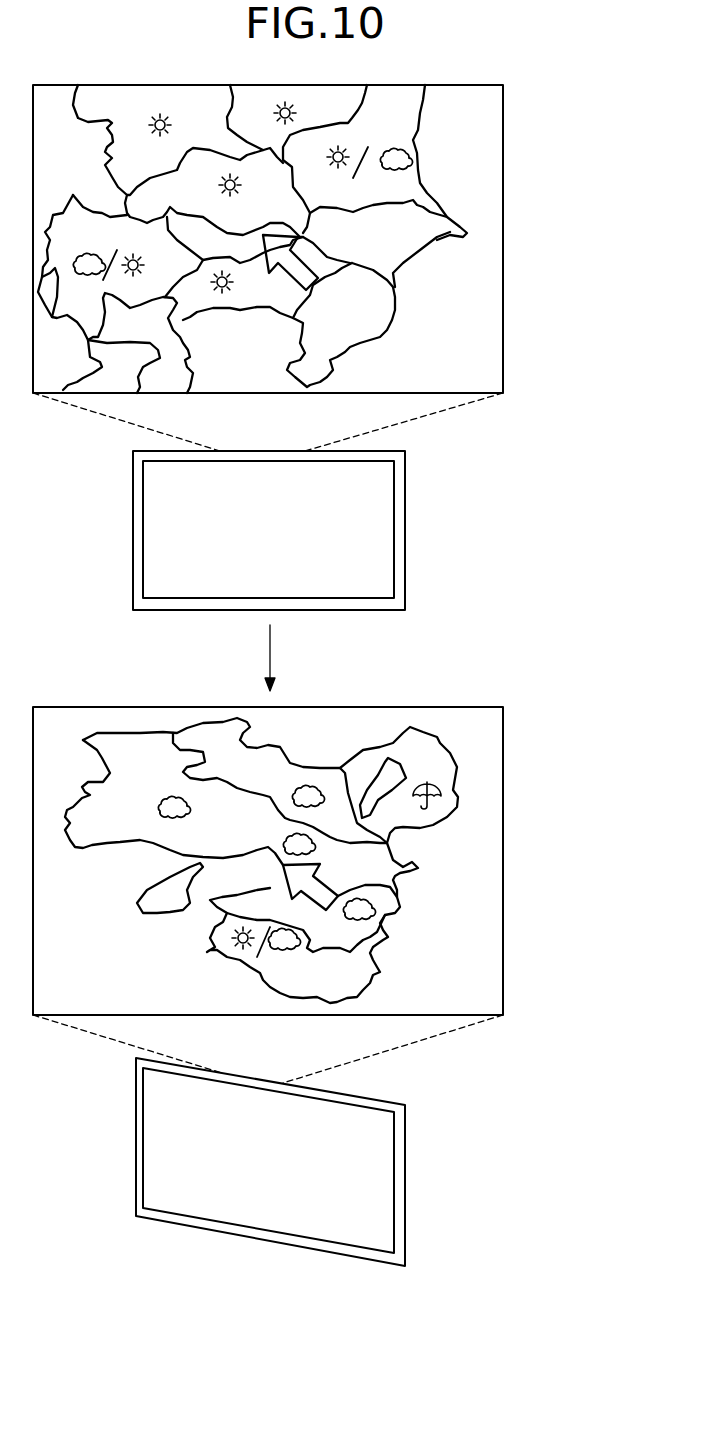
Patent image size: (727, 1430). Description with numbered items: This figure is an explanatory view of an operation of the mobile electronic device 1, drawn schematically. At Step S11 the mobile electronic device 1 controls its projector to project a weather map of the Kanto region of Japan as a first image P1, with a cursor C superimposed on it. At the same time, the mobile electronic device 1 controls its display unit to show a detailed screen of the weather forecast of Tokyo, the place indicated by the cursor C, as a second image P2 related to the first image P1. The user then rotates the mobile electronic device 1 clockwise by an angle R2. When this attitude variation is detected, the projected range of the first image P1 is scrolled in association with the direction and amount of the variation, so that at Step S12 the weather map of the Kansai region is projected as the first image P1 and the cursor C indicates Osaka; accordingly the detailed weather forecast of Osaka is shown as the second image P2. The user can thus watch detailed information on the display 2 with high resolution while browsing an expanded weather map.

The mobile electronic device 1 is at (406, 506).
The display 2 is at (394, 553).
The first image P1 is at (503, 243).
The second image P2 is at (163, 530).
The cursor C is at (350, 263).
The Step S11 is at (531, 130).
The Step S12 is at (531, 748).
The angle R2 is at (358, 1268).